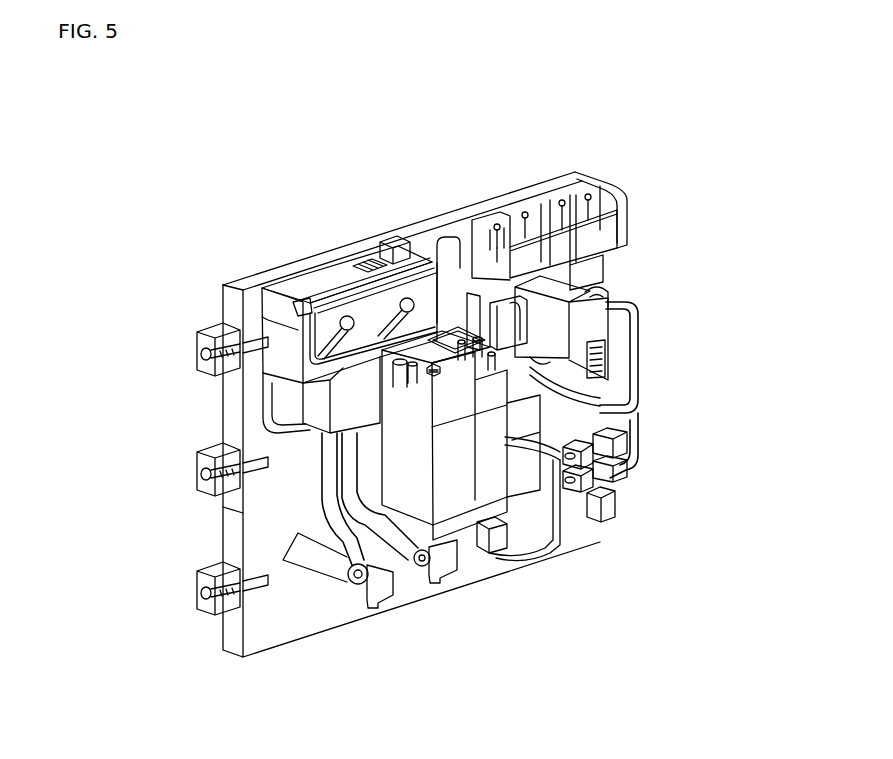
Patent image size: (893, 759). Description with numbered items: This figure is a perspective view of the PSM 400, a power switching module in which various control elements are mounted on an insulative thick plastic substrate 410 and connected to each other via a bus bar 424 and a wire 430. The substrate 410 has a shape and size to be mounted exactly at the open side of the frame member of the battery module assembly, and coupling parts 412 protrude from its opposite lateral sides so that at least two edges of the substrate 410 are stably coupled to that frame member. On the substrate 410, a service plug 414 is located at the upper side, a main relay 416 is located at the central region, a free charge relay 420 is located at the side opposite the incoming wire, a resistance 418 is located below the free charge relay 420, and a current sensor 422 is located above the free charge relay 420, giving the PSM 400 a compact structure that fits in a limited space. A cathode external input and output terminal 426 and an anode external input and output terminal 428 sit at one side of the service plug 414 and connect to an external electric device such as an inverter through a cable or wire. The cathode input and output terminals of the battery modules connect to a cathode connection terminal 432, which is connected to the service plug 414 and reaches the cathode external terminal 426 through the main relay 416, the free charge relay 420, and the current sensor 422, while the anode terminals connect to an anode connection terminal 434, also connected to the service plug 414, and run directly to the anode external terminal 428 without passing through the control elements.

The PSM 400 is at (177, 213).
The insulative thick plastic substrate 410 is at (262, 614).
The coupling parts 412 is at (200, 473).
The service plug 414 is at (367, 318).
The main relay 416 is at (460, 493).
The resistance 418 is at (513, 520).
The free charge relay 420 is at (587, 415).
The current sensor 422 is at (570, 313).
The bus bar 424 is at (436, 266).
The cathode external input and output terminal 426 is at (562, 197).
The anode external input and output terminal 428 is at (507, 223).
The wire 430 is at (637, 362).
The cathode connection terminal 432 is at (425, 575).
The anode connection terminal 434 is at (378, 605).